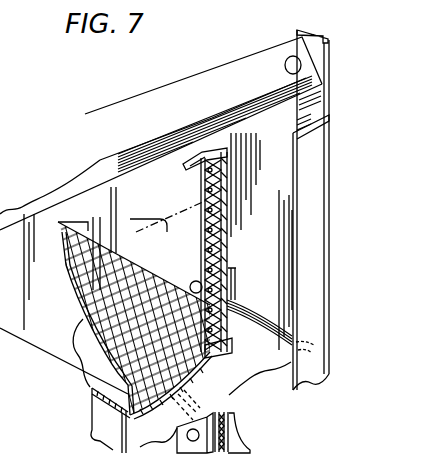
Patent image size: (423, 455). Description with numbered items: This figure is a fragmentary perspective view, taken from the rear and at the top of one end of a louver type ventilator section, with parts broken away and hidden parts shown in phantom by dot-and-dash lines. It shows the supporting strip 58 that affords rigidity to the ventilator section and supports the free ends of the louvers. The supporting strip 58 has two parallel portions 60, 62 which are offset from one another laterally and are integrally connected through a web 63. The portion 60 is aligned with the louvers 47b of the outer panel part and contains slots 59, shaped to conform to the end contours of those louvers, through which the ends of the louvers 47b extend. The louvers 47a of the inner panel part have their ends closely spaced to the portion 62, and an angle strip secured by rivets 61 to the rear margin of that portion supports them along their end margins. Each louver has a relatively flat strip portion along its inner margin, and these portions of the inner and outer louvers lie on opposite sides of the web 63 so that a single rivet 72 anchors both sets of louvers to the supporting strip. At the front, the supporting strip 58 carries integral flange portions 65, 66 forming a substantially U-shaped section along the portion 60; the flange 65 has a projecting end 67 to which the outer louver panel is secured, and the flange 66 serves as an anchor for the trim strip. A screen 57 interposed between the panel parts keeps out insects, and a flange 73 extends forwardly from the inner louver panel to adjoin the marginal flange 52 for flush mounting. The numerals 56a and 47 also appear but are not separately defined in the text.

The marginal flange 52 is at (264, 60).
The portion of the supporting strip 60 is at (250, 133).
The web 63 is at (227, 129).
The projecting end of flange 67 is at (322, 43).
The flange portion 65 is at (308, 110).
The supporting strip 58 is at (329, 200).
The flange 66 is at (316, 259).
The louvers of the outer panel part 47b is at (268, 317).
The slots 59 is at (240, 317).
The rivet 72 is at (228, 268).
The flange 73 is at (78, 180).
The screen frame 56a is at (62, 259).
The screen 57 is at (143, 300).
The louvers of the inner panel part 47a is at (83, 319).
The rivets 61 is at (100, 434).
The portion of the supporting strip 62 is at (211, 400).
The cable 47 is at (192, 437).